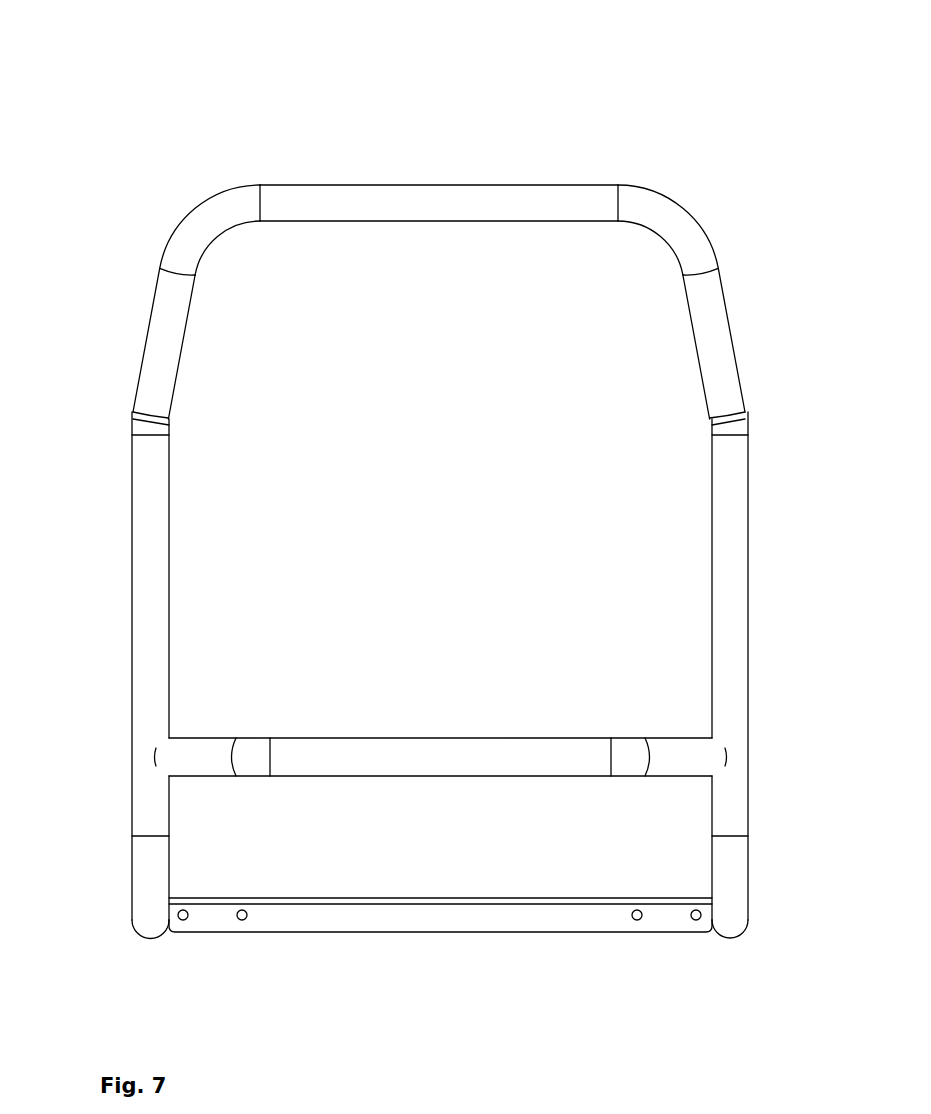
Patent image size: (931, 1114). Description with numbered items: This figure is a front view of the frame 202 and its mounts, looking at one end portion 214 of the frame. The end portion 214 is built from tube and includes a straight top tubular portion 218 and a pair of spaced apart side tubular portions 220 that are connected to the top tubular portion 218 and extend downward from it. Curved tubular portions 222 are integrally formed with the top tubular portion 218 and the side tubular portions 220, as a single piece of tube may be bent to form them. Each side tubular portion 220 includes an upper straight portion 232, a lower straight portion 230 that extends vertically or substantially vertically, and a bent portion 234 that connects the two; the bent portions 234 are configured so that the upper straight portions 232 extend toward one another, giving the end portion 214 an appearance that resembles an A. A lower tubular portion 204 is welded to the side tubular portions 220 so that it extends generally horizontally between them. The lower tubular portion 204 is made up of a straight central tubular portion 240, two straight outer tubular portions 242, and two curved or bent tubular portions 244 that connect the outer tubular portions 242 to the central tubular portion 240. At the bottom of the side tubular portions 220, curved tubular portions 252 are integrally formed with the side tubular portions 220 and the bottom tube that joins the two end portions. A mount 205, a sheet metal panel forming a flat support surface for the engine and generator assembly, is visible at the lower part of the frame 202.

The frame 202 is at (444, 38).
The lower tubular portion 204 is at (418, 752).
The mount 205 is at (402, 920).
The end portion 214 is at (737, 315).
The top tubular portion 218 is at (452, 195).
The side tubular portion 220 is at (132, 585).
The curved tubular portion 222 is at (203, 210).
The lower straight portion 230 is at (142, 640).
The upper straight portion 232 is at (158, 340).
The bent portion 234 is at (135, 418).
The straight central tubular portion 240 is at (352, 750).
The straight outer tubular portion 242 is at (193, 746).
The curved or bent tubular portion 244 is at (253, 748).
The curved tubular portion 252 is at (145, 918).